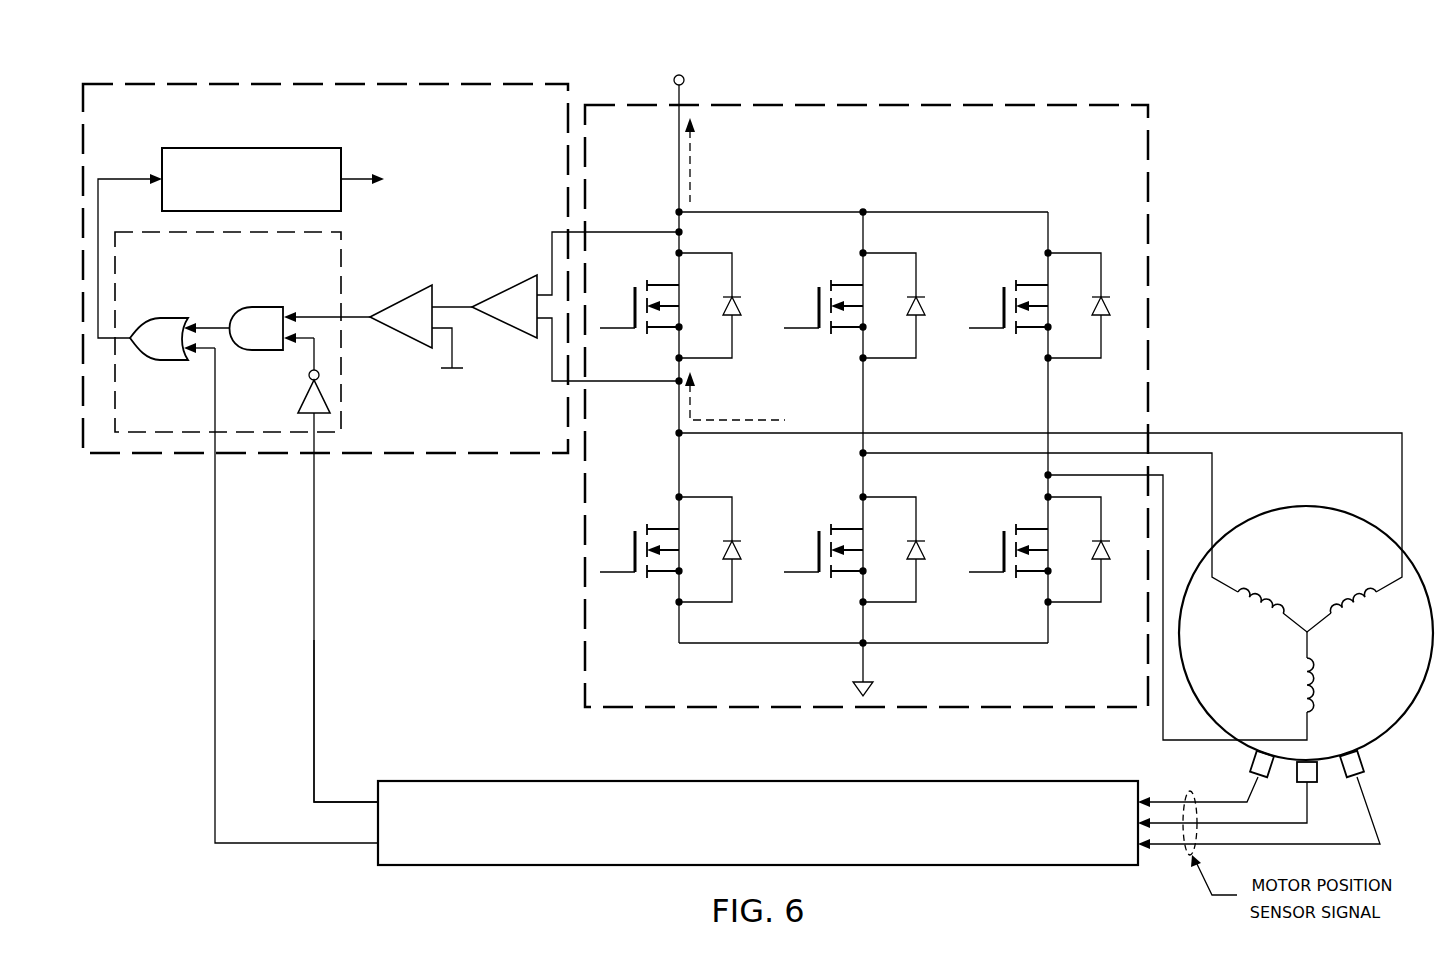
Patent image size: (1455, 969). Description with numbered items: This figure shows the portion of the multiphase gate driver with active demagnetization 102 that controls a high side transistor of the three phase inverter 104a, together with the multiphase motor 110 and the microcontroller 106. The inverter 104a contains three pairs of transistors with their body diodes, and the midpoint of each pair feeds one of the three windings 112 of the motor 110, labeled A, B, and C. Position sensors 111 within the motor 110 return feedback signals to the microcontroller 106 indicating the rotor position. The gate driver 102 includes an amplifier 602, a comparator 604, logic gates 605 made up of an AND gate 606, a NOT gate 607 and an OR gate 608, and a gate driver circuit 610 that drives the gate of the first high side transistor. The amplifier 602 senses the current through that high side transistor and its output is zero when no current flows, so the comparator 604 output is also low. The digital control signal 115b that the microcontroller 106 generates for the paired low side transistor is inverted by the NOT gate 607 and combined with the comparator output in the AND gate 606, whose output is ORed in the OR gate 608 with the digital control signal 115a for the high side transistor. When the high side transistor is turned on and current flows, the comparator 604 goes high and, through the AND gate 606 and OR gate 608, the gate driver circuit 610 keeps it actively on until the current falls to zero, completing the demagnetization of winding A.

The multiphase gate driver with active demagnetization 102 is at (147, 459).
The gate driver circuit 610 is at (250, 148).
The logic gates 605 is at (352, 380).
The OR gate 608 is at (160, 318).
The AND gate 606 is at (262, 307).
The NOT gate 607 is at (302, 395).
The comparator 604 is at (396, 300).
The amplifier 602 is at (504, 290).
The digital control signal for Q1 115a is at (215, 612).
The digital control signal for Q2 115b is at (314, 612).
The microcontroller 106 is at (620, 866).
The three phase inverter 104a is at (1158, 277).
The multiphase motor 110 is at (1338, 500).
The windings 112 is at (1257, 610).
The position sensors 111 is at (1245, 757).